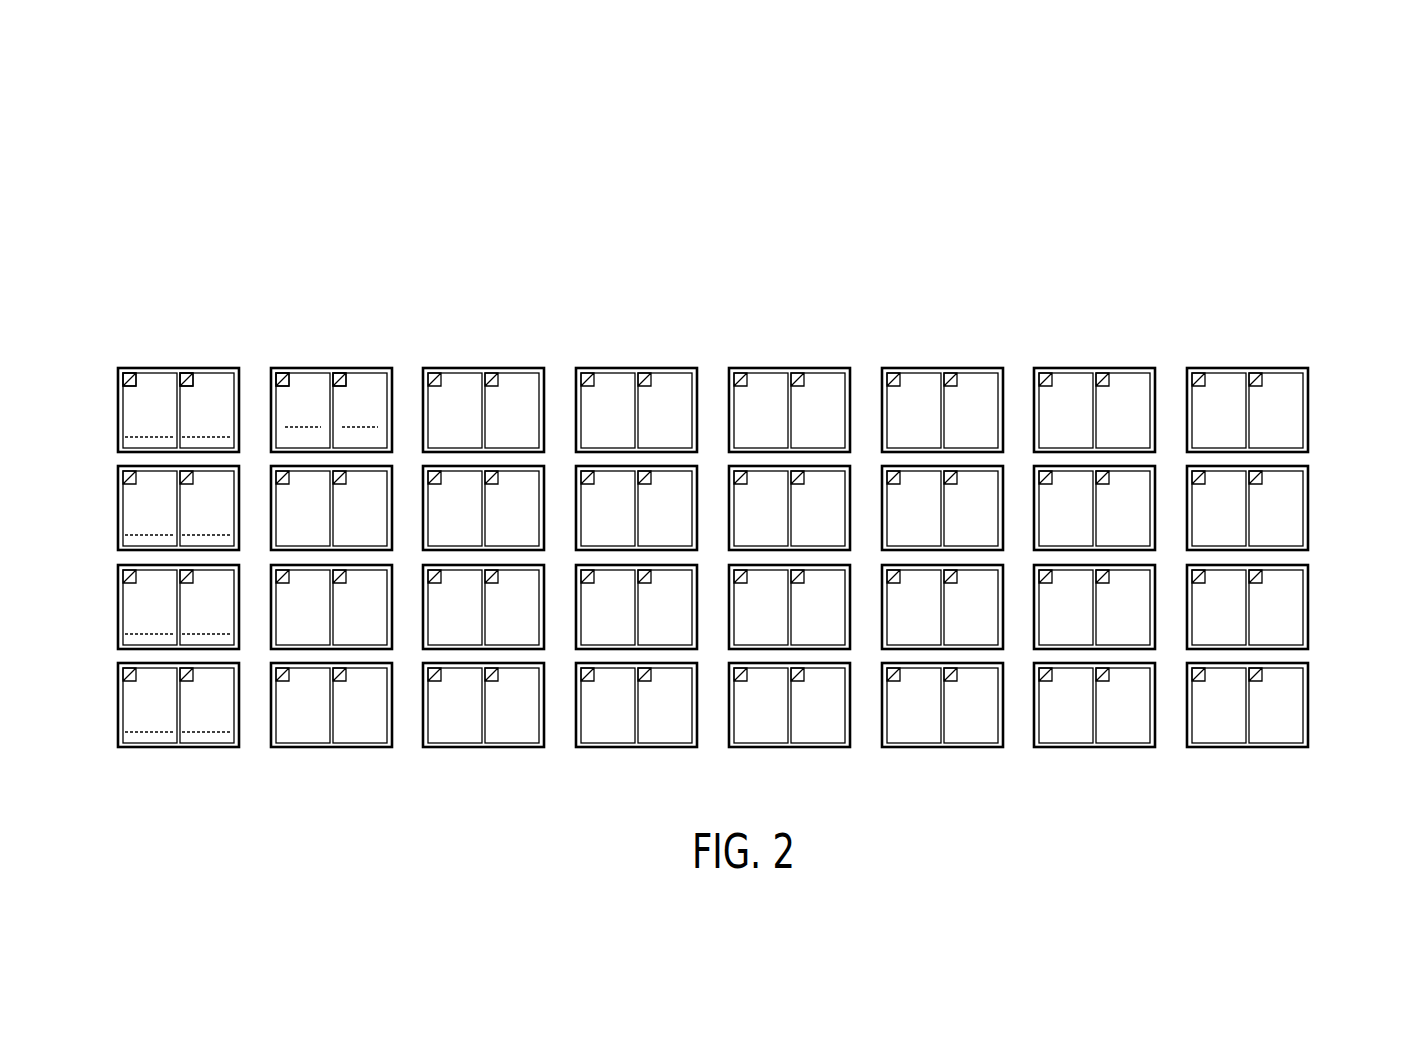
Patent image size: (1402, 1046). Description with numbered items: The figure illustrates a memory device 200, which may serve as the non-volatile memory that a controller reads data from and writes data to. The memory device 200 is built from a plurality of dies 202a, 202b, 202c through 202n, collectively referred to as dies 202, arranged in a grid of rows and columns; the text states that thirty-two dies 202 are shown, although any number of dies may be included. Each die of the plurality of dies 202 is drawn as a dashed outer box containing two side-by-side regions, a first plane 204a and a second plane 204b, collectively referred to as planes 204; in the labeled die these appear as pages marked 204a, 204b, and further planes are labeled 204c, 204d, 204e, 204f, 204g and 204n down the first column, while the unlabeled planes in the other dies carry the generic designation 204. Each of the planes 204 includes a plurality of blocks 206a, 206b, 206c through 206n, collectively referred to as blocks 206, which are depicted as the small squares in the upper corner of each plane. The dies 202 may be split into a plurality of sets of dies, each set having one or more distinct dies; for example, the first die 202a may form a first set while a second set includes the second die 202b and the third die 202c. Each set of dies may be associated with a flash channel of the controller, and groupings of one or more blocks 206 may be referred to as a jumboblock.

The memory device 200 is at (124, 102).
The dies 202 is at (425, 368).
The first die 202a is at (118, 413).
The second die 202b is at (118, 511).
The third die 202c is at (118, 610).
The die 202n is at (118, 708).
The planes 204 is at (321, 363).
The first plane 204a is at (138, 363).
The second plane 204b is at (203, 363).
The page P2 204c is at (150, 508).
The page P5 204d is at (207, 508).
The page P4 204e is at (150, 607).
The page P7 204f is at (207, 607).
The page P6 204g is at (150, 705).
The page Pn 204n is at (207, 705).
The blocks 206 is at (492, 372).
The block 206a is at (129, 372).
The block 206b is at (186, 372).
The block 206c is at (283, 372).
The block 206n is at (340, 372).